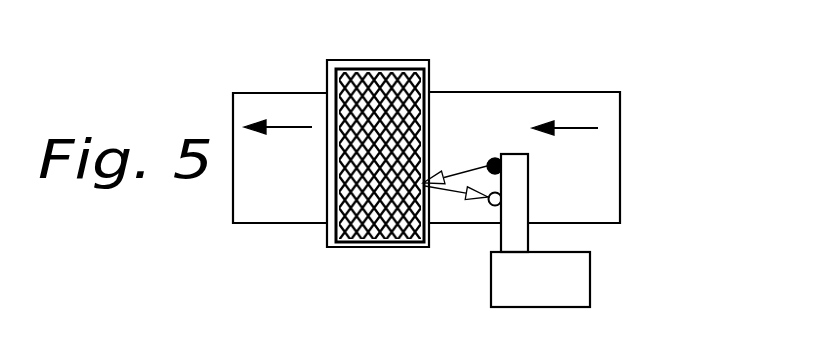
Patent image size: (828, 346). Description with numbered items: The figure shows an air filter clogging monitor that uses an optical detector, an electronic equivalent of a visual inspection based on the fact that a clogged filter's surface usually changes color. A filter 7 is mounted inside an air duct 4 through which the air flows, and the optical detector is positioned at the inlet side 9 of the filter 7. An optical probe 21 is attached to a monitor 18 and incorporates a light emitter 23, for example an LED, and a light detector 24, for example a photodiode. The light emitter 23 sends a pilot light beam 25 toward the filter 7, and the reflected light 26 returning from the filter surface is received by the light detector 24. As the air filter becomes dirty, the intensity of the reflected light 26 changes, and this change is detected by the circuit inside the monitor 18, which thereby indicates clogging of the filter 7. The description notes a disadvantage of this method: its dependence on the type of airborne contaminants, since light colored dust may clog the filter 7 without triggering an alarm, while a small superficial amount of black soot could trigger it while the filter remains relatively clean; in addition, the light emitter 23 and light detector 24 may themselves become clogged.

The air duct 4 is at (588, 97).
The filter 7 is at (373, 73).
The inlet side 9 is at (423, 118).
The monitor 18 is at (578, 286).
The optical probe 21 is at (510, 235).
The light emitter 23 is at (494, 158).
The light detector 24 is at (501, 200).
The pilot light beam 25 is at (455, 168).
The reflected light 26 is at (470, 200).